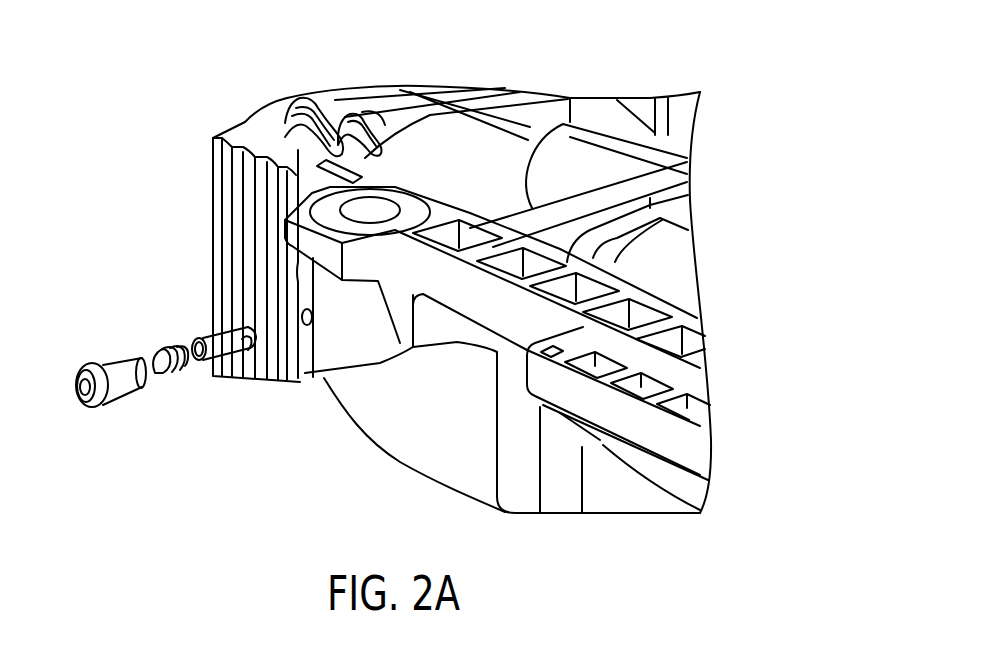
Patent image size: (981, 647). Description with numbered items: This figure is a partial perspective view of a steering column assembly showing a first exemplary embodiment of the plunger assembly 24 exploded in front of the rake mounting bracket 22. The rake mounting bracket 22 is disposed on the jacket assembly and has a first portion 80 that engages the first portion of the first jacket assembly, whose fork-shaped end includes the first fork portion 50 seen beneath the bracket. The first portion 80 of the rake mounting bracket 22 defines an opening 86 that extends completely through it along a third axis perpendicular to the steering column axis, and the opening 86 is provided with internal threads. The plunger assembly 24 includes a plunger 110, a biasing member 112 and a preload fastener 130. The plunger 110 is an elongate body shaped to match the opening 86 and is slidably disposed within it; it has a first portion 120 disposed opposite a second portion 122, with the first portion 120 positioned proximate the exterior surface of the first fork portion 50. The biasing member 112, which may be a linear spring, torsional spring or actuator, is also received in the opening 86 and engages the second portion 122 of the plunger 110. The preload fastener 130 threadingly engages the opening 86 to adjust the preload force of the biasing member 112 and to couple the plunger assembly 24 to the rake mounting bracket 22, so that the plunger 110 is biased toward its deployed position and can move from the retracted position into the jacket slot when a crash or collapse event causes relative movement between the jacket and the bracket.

The rake mounting bracket 22 is at (497, 86).
The plunger assembly 24 is at (140, 458).
The first fork portion 50 is at (517, 525).
The first portion of the rake mounting bracket 80 is at (235, 135).
The opening 86 is at (307, 325).
The plunger 110 is at (212, 340).
The biasing member 112 is at (162, 350).
The first portion of the plunger 120 is at (245, 352).
The second portion of the plunger 122 is at (200, 360).
The preload fastener 130 is at (82, 400).